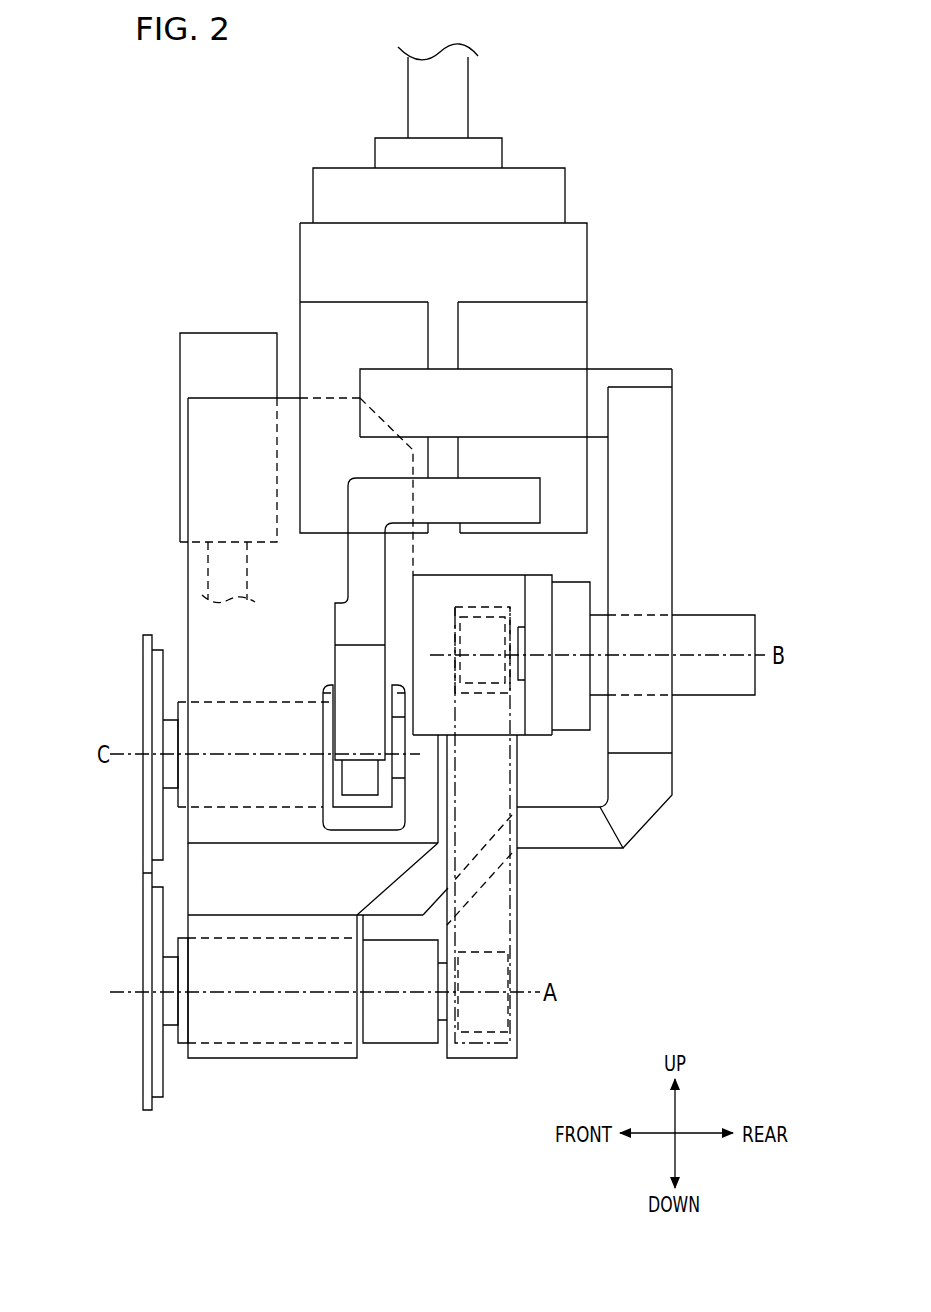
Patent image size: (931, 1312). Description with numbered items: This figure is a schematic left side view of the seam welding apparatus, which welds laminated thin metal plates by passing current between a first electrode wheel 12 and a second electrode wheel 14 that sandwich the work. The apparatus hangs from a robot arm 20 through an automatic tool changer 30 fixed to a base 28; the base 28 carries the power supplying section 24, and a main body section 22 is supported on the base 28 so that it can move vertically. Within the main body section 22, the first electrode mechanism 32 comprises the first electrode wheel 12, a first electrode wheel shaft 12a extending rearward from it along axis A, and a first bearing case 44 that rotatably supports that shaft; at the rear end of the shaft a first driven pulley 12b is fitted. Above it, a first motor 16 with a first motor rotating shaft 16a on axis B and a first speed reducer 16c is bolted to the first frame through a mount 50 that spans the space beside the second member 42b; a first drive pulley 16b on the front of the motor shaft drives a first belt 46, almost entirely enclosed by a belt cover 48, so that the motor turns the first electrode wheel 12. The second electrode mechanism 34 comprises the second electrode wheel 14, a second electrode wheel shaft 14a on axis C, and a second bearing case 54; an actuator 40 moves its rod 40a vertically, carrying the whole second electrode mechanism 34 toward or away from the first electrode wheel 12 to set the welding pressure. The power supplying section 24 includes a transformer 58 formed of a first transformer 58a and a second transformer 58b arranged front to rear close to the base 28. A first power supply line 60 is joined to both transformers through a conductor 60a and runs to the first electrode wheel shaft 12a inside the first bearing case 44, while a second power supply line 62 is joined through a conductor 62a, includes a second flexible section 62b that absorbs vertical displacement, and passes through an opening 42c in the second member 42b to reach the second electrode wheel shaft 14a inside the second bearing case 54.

The first electrode wheel 12 is at (168, 1022).
The first electrode wheel shaft 12a is at (170, 970).
The first driven pulley 12b is at (483, 1045).
The second electrode wheel 14 is at (148, 683).
The second electrode wheel shaft 14a is at (172, 731).
The first motor 16 is at (708, 628).
The first motor rotating shaft 16a is at (540, 660).
The first drive pulley 16b is at (480, 605).
The first speed reducer 16c is at (565, 735).
The arm 20 is at (455, 98).
The main body section 22 is at (107, 863).
The power supplying section 24 is at (640, 312).
The base 28 is at (570, 250).
The automatic tool changer 30 is at (540, 193).
The first electrode mechanism 32 is at (252, 1068).
The second electrode mechanism 34 is at (130, 598).
The actuator 40 is at (205, 360).
The rod 40a is at (228, 573).
The second member 42b is at (205, 560).
The opening 42c is at (330, 777).
The first bearing case 44 is at (266, 960).
The first belt 46 is at (512, 937).
The belt cover 48 is at (518, 898).
The mount 50 is at (546, 737).
The second bearing case 54 is at (226, 722).
The transformer 58 is at (600, 296).
The first transformer 58a is at (318, 312).
The second transformer 58b is at (568, 347).
The first power supply line 60 is at (685, 493).
The conductor 60a is at (665, 385).
The second power supply line 62 is at (332, 660).
The conductor 62a is at (360, 497).
The second flexible section 62b is at (372, 657).